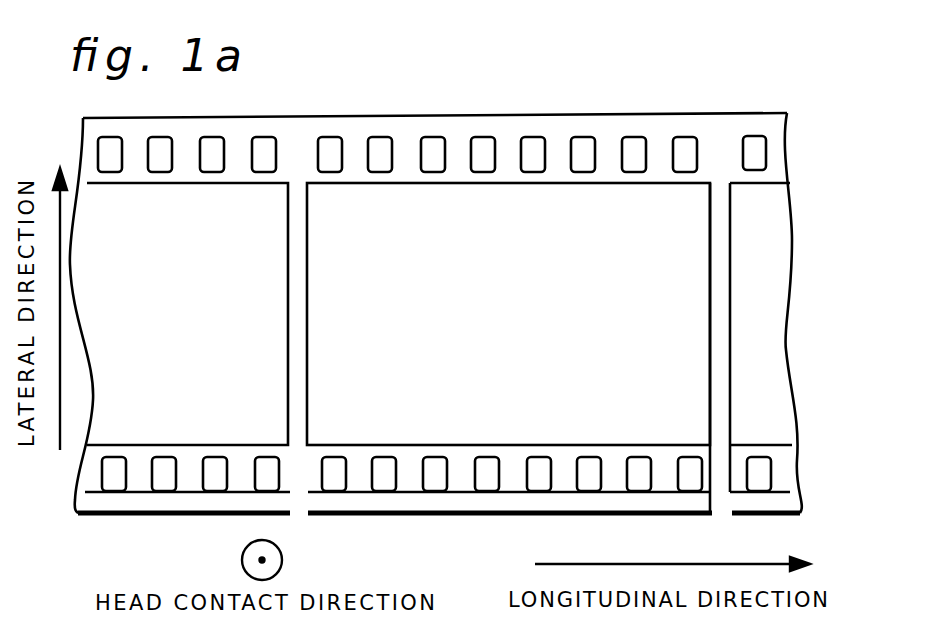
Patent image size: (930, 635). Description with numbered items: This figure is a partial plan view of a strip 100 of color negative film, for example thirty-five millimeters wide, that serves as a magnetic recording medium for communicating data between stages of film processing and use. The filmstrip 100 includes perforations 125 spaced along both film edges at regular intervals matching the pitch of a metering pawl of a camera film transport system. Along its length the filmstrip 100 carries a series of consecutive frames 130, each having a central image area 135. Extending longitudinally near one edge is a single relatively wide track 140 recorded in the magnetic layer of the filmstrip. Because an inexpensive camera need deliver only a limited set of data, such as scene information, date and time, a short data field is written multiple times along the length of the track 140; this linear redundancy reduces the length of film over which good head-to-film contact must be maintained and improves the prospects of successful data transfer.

The strip of color negative film 100 is at (798, 422).
The perforations 125 is at (753, 135).
The frames 130 is at (702, 105).
The central image area 135 is at (710, 268).
The track 140 is at (527, 502).